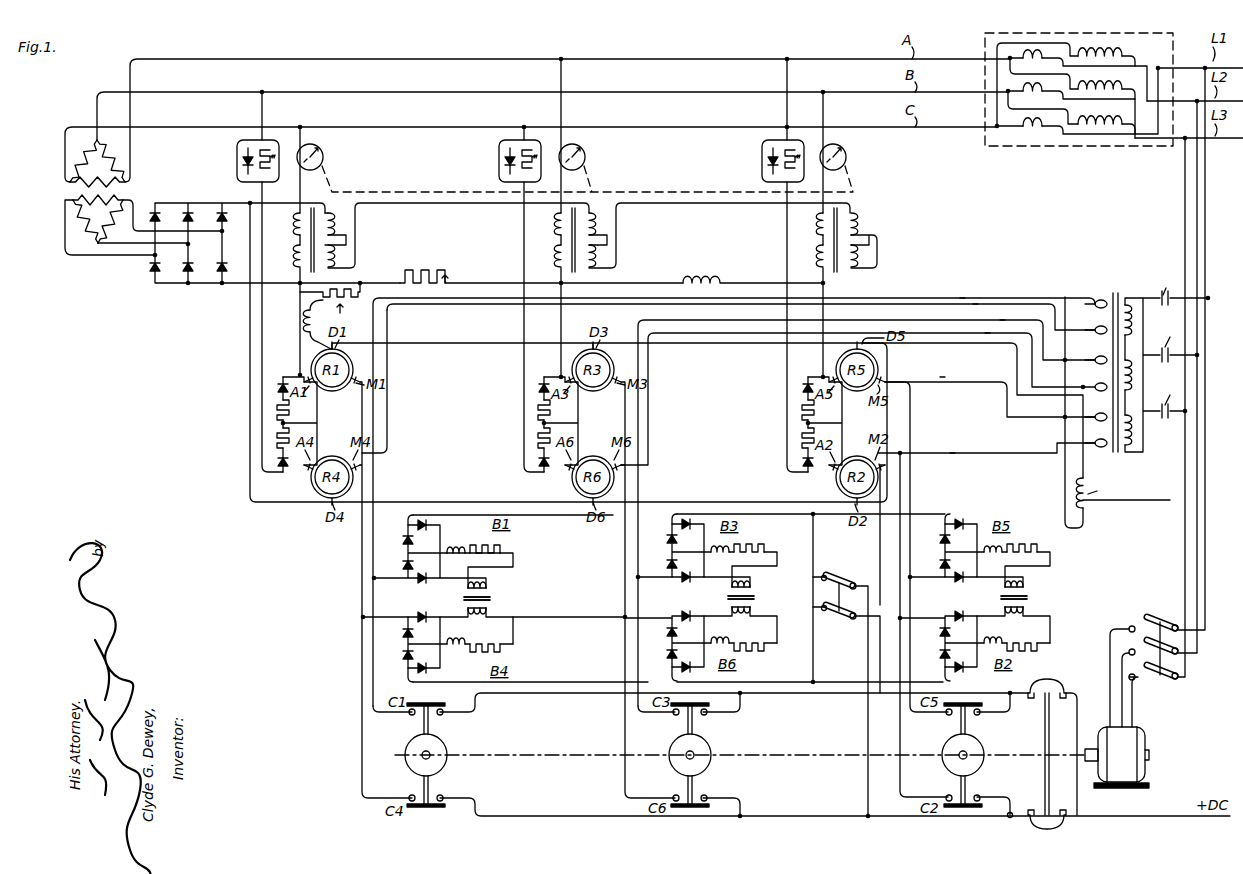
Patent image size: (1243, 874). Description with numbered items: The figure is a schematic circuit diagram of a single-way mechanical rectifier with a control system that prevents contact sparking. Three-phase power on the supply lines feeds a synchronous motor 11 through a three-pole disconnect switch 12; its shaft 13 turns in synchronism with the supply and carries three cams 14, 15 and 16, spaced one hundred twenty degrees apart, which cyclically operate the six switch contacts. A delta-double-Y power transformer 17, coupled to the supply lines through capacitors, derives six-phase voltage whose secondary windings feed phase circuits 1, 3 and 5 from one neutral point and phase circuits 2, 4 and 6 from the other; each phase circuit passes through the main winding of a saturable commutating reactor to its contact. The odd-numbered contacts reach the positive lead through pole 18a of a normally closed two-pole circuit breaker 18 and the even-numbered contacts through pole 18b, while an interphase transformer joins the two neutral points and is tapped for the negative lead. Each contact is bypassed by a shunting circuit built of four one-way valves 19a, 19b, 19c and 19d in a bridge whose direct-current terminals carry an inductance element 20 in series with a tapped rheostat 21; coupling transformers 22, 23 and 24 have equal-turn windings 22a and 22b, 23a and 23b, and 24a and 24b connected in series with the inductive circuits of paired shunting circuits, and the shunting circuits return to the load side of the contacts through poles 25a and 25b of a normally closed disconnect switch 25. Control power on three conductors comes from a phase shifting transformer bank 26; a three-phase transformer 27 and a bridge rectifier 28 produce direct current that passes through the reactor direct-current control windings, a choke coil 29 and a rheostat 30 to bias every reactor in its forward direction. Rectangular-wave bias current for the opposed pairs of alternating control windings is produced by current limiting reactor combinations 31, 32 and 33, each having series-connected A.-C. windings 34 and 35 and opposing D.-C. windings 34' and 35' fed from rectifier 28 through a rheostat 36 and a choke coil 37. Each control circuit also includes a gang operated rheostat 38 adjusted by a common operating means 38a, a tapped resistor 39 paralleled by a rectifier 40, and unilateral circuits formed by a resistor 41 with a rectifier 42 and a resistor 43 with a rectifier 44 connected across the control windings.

The phase circuit 1 is at (949, 298).
The phase circuit 2 is at (957, 453).
The phase circuit 3 is at (1003, 320).
The phase circuit 4 is at (973, 303).
The phase circuit 5 is at (949, 377).
The phase circuit 6 is at (974, 333).
The three-phase synchronous motor 11 is at (1140, 738).
The three-pole disconnect switch 12 is at (1153, 614).
The shaft 13 is at (578, 755).
The cam 14 is at (438, 750).
The cam 15 is at (680, 745).
The cam 16 is at (977, 745).
The power transformer 17 is at (1137, 404).
The two-pole circuit breaker 18 is at (1052, 746).
The pole of circuit breaker 18a is at (1058, 688).
The pole of circuit breaker 18b is at (1030, 816).
The one-way electric valve 19a is at (427, 580).
The one-way electric valve 19b is at (404, 575).
The one-way electric valve 19c is at (428, 525).
The one-way electric valve 19d is at (405, 538).
The inductance element 20 is at (458, 551).
The adjustably tapped resistor 21 is at (506, 549).
The coupling transformer 22 is at (489, 598).
The winding of coupling transformer 22a is at (490, 586).
The winding of coupling transformer 22b is at (478, 613).
The coupling transformer 23 is at (753, 598).
The winding of coupling transformer 23a is at (754, 586).
The winding of coupling transformer 23b is at (742, 613).
The coupling transformer 24 is at (1025, 598).
The winding of coupling transformer 24a is at (1027, 586).
The winding of coupling transformer 24b is at (1014, 613).
The two-pole disconnect switch 25 is at (846, 683).
The pole of disconnect switch 25a is at (845, 576).
The pole of disconnect switch 25b is at (843, 617).
The phase shifting transformer bank 26 is at (1037, 148).
The three-phase transformer 27 is at (140, 196).
The full wave bridge type rectifier 28 is at (487, 252).
The choke coil 29 is at (307, 321).
The rheostat 30 is at (300, 292).
The current limiting reactor combination 31 is at (441, 237).
The current limiting reactor combination 32 is at (690, 236).
The current limiting reactor combination 33 is at (849, 240).
The A.-C. winding 34 is at (546, 224).
The D.-C. winding 34' is at (615, 217).
The A.-C. winding 35 is at (546, 256).
The D.-C. winding 35' is at (619, 256).
The rheostat 36 is at (447, 277).
The choke coil 37 is at (703, 277).
The gang operated rheostat 38 is at (323, 157).
The common operating means 38a is at (667, 192).
The tapped resistor 39 is at (267, 176).
The one-way electric valve 40 is at (244, 162).
The resistor 41 is at (277, 399).
The rectifier 42 is at (279, 382).
The resistor 43 is at (277, 441).
The rectifier 44 is at (279, 470).